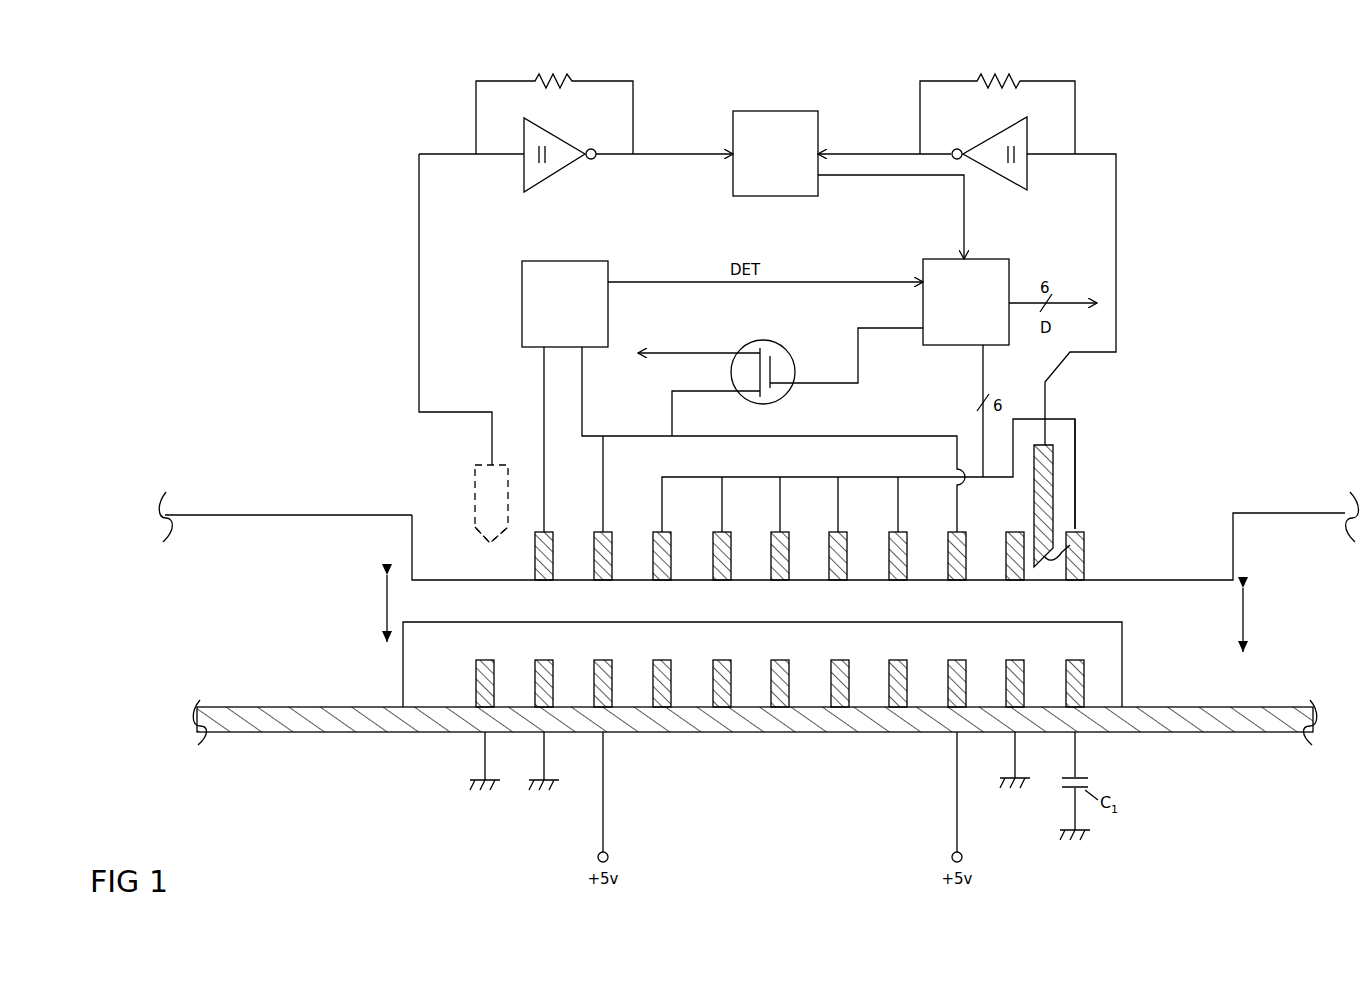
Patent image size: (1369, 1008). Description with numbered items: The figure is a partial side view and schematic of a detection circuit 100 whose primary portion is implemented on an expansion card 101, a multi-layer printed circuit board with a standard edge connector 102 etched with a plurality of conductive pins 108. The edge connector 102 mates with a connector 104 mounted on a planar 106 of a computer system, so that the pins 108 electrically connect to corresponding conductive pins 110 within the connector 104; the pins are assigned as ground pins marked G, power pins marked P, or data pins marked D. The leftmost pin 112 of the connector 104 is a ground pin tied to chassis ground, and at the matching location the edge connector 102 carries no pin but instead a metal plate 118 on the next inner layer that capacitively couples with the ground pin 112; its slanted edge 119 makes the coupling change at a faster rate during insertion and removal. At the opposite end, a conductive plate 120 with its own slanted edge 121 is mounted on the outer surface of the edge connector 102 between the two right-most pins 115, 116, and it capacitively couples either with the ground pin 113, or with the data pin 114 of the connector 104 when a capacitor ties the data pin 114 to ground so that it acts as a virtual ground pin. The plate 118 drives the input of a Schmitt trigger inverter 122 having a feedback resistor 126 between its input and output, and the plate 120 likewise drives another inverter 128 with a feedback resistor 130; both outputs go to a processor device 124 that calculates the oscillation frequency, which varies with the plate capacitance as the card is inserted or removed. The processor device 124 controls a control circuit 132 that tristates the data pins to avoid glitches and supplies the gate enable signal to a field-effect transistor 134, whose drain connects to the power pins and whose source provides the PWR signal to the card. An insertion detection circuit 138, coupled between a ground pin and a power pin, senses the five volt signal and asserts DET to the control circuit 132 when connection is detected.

The detection circuit 100 is at (346, 170).
The expansion card 101 is at (242, 518).
The edge connector 102 is at (410, 545).
The connector 104 is at (402, 678).
The planar 106 is at (270, 705).
The conductive pins 108 is at (655, 580).
The conductive pins 110 is at (735, 700).
The ground pin 112 is at (476, 695).
The ground pin 113 is at (1022, 660).
The data pin 114 is at (1084, 680).
The right-most pin 115 is at (1010, 582).
The right-most pin 116 is at (1076, 582).
The metal plate 118 is at (462, 472).
The slanted edge 119 is at (485, 541).
The conductive plate 120 is at (1040, 468).
The slanted edge 121 is at (1070, 535).
The inverter 122 is at (548, 132).
The processor device 124 is at (797, 111).
The feedback resistor 126 is at (538, 78).
The inverter 128 is at (990, 136).
The feedback resistor 130 is at (1020, 78).
The control circuit 132 is at (1000, 259).
The transistor 134 is at (785, 350).
The insertion detection circuit 138 is at (560, 261).